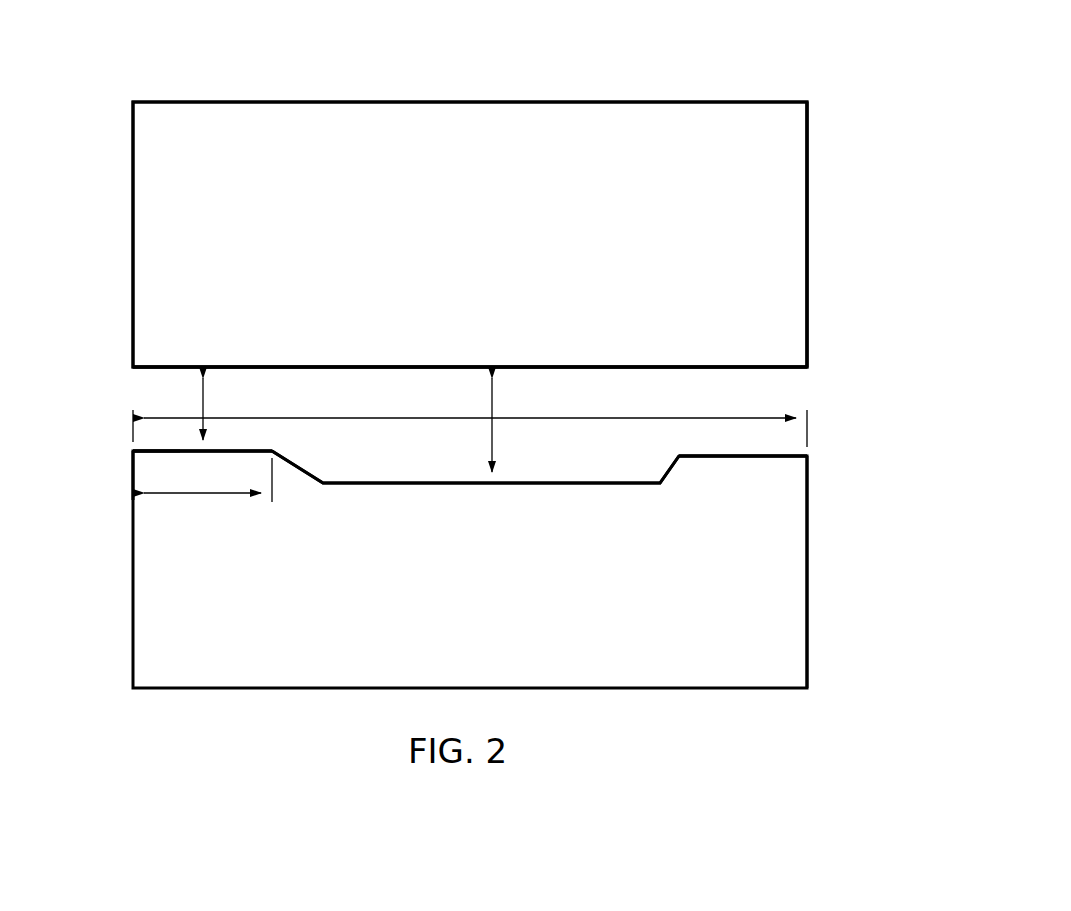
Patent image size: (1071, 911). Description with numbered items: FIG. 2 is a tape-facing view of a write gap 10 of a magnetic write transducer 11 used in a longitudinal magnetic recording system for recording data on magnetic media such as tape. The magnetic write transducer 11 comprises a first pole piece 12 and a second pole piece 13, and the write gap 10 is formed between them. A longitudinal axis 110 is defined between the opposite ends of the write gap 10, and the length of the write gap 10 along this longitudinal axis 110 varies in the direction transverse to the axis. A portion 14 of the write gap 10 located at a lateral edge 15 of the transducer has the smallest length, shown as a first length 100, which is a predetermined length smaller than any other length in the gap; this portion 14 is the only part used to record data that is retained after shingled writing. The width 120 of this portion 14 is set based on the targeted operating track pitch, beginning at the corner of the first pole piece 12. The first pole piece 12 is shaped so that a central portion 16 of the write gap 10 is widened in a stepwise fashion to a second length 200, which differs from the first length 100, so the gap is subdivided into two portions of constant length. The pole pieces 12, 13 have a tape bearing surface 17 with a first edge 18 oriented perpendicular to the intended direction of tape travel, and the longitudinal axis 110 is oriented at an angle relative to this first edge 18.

The write gap 10 is at (806, 388).
The magnetic write transducer 11 is at (784, 47).
The first pole piece 12 is at (133, 572).
The second pole piece 13 is at (133, 200).
The portion of the write gap 14 is at (127, 385).
The lateral edge 15 is at (133, 451).
The central portion of the write gap 16 is at (615, 472).
The tape bearing surface 17 is at (826, 283).
The first edge 18 is at (114, 476).
The first length 100 is at (205, 400).
The longitudinal axis 110 is at (372, 418).
The width of the portion 120 is at (218, 495).
The second length 200 is at (495, 441).